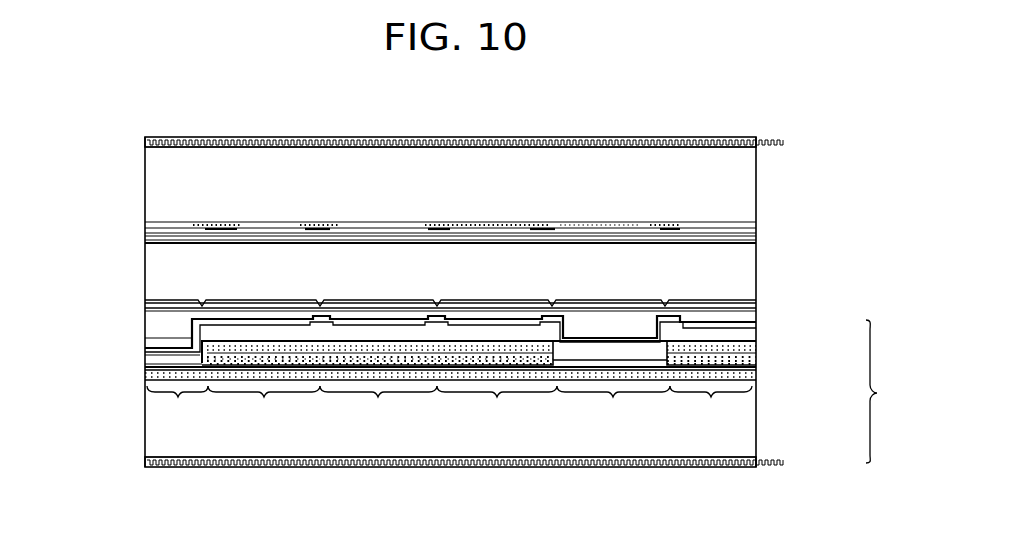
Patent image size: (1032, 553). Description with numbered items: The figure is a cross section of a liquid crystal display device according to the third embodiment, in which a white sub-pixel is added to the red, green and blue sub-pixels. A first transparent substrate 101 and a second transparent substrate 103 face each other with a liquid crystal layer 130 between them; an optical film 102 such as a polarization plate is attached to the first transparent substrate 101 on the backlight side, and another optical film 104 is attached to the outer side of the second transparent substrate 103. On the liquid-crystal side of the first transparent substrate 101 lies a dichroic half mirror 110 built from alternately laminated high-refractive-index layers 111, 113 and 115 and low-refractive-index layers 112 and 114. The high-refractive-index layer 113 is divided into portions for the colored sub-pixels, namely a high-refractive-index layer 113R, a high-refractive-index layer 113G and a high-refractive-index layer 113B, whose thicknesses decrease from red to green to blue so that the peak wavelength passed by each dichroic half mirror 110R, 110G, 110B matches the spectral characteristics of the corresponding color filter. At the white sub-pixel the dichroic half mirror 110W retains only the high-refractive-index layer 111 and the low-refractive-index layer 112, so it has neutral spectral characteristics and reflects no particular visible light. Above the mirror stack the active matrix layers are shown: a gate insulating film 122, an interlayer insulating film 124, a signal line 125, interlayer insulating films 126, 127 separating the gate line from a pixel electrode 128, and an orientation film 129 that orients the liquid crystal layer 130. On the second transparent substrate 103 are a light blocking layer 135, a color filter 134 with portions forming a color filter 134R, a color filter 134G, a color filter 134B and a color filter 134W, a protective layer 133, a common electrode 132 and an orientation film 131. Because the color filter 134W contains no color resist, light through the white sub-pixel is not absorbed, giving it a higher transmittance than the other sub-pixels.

The first transparent substrate 101 is at (162, 445).
The optical film 102 is at (757, 460).
The second transparent substrate 103 is at (158, 163).
The optical film 104 is at (756, 137).
The dichroic half mirror 110 is at (895, 391).
The dichroic half mirror 110W is at (408, 406).
The dichroic half mirror 110R is at (480, 406).
The dichroic half mirror 110G is at (378, 406).
The dichroic half mirror 110B is at (497, 406).
The high-refractive-index layer 111 is at (757, 375).
The low-refractive-index layer 112 is at (757, 367).
The high-refractive-index layer 113 is at (757, 360).
The high-refractive-index layer 113R is at (237, 367).
The high-refractive-index layer 113G is at (348, 367).
The high-refractive-index layer 113B is at (470, 367).
The low-refractive-index layer 114 is at (757, 352).
The high-refractive-index layer 115 is at (757, 345).
The gate insulating film 122 is at (150, 365).
The interlayer insulating film 124 is at (155, 336).
The signal line 125 is at (157, 288).
The interlayer insulating film 126 is at (750, 330).
The interlayer insulating film 127 is at (750, 312).
The pixel electrode 128 is at (252, 303).
The orientation film 129 is at (380, 300).
The liquid crystal layer 130 is at (748, 263).
The orientation film 131 is at (756, 234).
The common electrode 132 is at (150, 238).
The protective layer 133 is at (756, 229).
The color filter 134 is at (756, 222).
The color filter 134R is at (285, 225).
The color filter 134G is at (408, 225).
The color filter 134B is at (492, 225).
The color filter 134W is at (625, 225).
The light blocking layer 135 is at (552, 225).